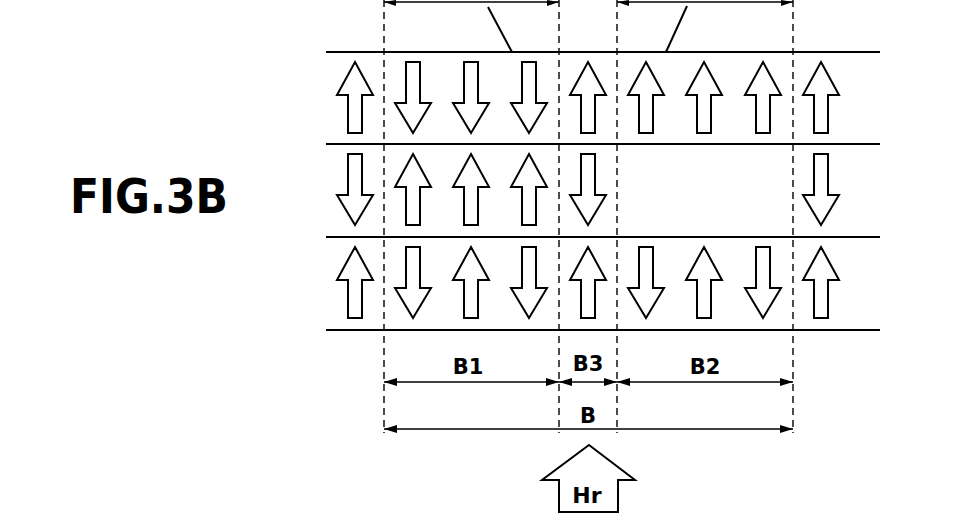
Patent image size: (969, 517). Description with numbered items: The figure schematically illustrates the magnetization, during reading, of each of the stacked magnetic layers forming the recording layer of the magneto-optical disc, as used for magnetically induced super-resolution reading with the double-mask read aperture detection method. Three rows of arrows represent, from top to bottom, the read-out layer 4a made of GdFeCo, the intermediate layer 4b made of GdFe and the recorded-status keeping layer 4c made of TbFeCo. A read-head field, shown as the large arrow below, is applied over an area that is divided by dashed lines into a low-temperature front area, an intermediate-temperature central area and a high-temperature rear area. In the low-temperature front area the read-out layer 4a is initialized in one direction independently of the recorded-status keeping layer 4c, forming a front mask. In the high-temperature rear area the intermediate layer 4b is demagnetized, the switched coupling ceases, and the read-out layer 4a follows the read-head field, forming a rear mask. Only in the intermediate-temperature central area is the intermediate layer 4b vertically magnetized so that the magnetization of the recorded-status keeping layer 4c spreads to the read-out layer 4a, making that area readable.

The read-out layer 4a is at (847, 78).
The intermediate layer 4b is at (850, 168).
The recorded-status keeping layer 4c is at (847, 259).